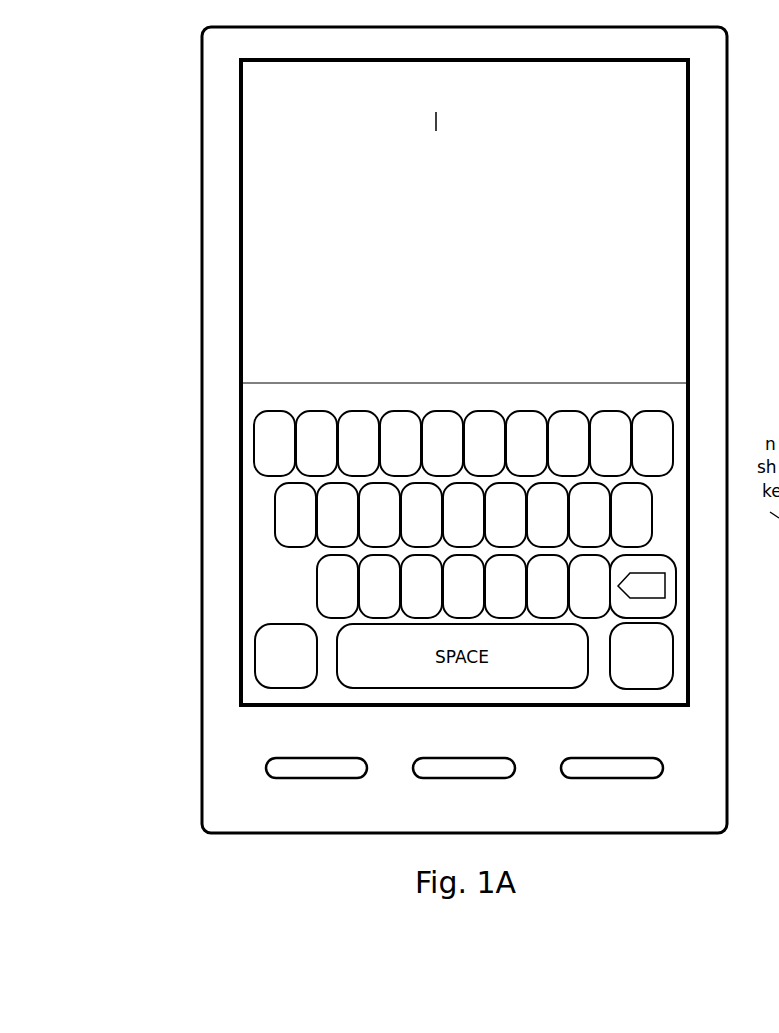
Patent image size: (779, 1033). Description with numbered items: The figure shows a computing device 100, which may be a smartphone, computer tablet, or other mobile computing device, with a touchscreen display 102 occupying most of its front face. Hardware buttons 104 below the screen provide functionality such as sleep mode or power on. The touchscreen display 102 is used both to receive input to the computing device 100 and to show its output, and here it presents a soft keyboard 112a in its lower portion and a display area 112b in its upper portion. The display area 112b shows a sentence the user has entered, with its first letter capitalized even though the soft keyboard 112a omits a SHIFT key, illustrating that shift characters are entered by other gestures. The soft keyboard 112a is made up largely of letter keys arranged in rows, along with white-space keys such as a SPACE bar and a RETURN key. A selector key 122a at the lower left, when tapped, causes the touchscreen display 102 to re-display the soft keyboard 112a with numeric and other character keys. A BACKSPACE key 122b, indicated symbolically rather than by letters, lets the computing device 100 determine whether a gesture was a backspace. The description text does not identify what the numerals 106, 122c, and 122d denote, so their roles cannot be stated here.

The computing device 100 is at (621, 835).
The touchscreen display 102 is at (673, 127).
The hardware buttons 104 is at (612, 778).
The device housing 106 is at (778, 100).
The soft keyboard 112a is at (193, 406).
The display area 112b is at (193, 76).
The selector key 122a is at (284, 689).
The BACKSPACE key 122b is at (535, 488).
The delete key 122c is at (670, 618).
The return key 122d is at (694, 708).